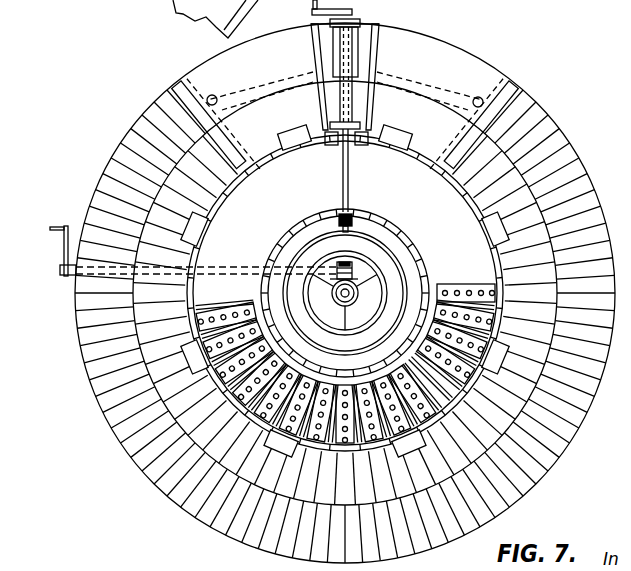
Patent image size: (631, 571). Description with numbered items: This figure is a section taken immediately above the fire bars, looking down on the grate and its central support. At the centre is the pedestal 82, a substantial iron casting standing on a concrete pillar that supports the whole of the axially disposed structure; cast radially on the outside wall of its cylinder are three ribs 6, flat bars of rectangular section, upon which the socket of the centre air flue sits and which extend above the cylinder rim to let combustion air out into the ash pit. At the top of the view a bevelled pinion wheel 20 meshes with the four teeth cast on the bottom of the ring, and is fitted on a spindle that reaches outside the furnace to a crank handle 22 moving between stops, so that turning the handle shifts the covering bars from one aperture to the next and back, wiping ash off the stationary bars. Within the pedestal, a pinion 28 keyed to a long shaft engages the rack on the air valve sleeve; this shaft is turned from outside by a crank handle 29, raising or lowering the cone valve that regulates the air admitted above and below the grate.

The crank handle 22 is at (352, 12).
The bevelled pinion wheel 20 is at (353, 214).
The pinion 28 is at (360, 266).
The ribs 6 is at (352, 305).
The pedestal 82 is at (334, 296).
The crank handle 29 is at (64, 236).